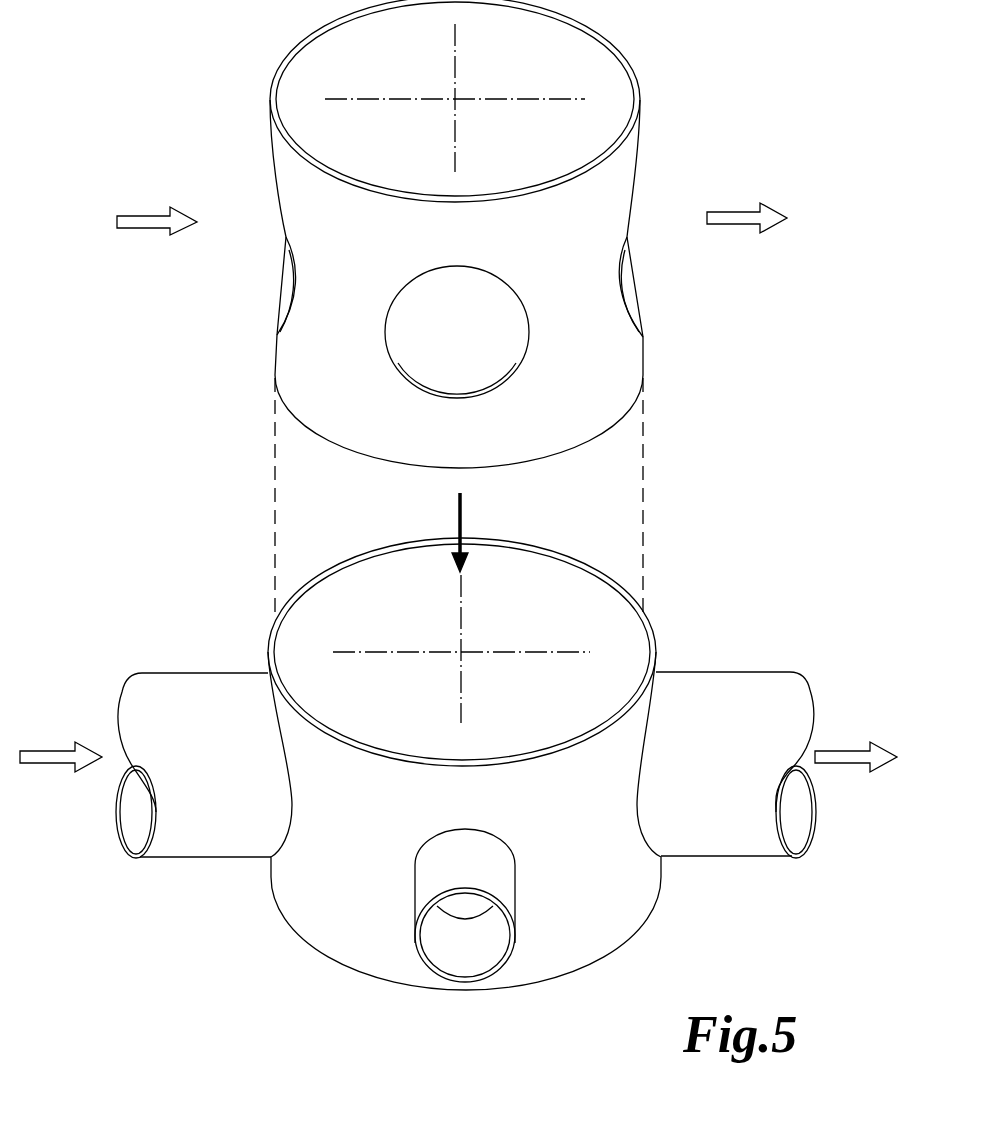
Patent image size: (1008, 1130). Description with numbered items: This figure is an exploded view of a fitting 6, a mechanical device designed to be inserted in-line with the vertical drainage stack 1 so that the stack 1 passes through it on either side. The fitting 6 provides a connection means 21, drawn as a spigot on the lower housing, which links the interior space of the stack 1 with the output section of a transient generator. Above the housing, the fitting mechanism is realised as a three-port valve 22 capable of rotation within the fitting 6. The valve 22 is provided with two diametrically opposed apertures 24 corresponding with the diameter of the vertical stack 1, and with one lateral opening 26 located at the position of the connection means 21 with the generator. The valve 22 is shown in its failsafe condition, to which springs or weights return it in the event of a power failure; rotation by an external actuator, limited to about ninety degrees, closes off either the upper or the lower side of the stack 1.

The vertical stack 1 is at (176, 688).
The fitting 6 is at (313, 900).
The connection means 21 is at (500, 887).
The three-port valve 22 is at (270, 130).
The apertures 24 is at (290, 300).
The lateral opening 26 is at (467, 367).